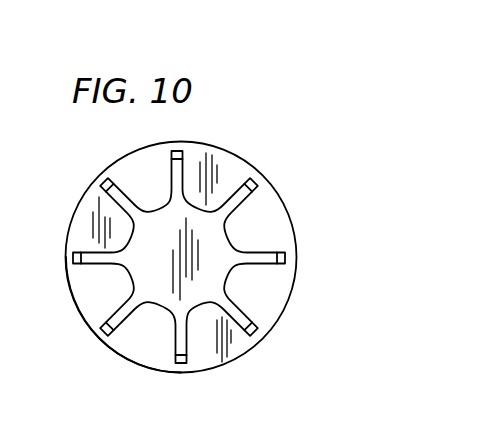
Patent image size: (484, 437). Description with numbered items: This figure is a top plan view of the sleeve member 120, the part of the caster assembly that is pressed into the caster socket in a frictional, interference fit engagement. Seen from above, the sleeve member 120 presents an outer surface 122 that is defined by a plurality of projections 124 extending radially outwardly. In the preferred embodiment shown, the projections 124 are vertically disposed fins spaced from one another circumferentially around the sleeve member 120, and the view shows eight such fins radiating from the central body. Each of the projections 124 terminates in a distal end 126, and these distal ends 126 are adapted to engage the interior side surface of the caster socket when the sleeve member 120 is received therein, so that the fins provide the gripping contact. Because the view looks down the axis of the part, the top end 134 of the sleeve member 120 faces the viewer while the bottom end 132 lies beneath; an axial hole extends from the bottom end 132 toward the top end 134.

The sleeve member 120 is at (206, 258).
The outer surface 122 is at (300, 252).
The projections 124 is at (243, 201).
The distal end 126 is at (251, 184).
The bottom end 132 is at (92, 331).
The top end 134 is at (153, 285).